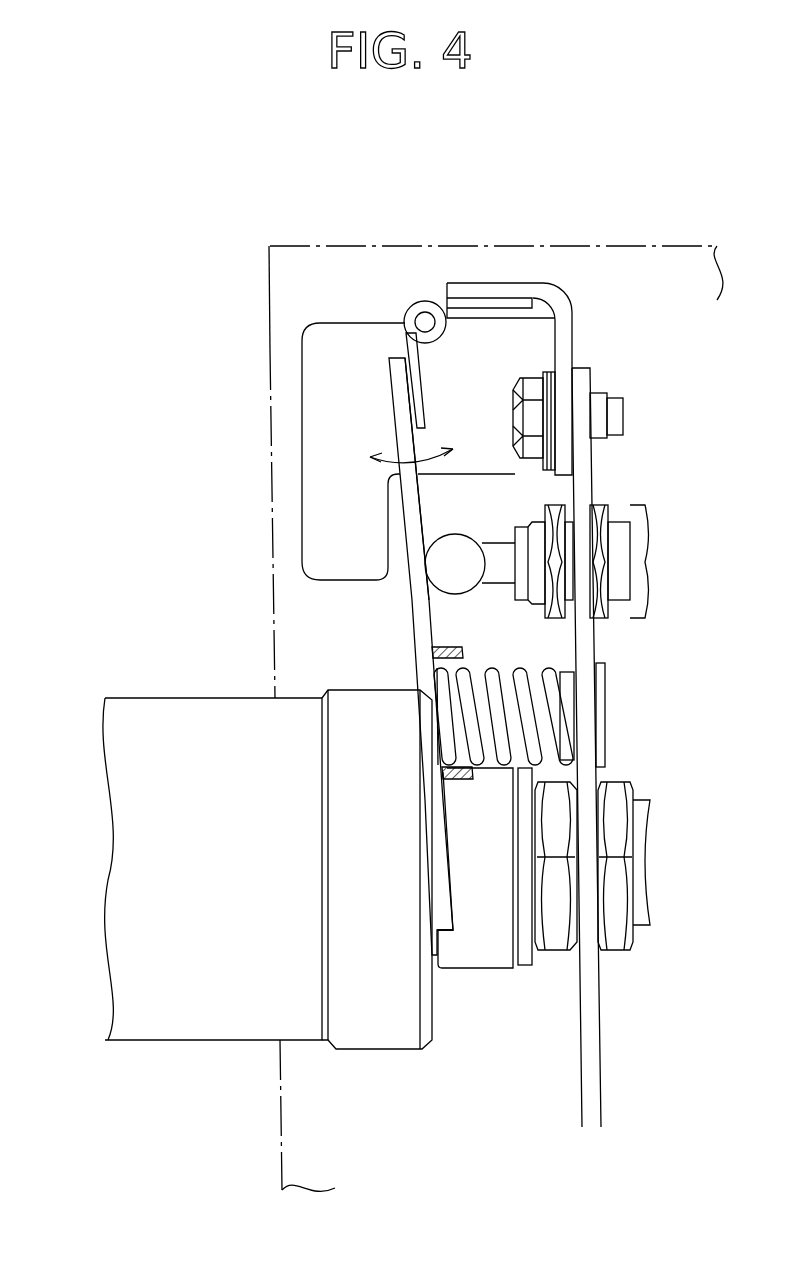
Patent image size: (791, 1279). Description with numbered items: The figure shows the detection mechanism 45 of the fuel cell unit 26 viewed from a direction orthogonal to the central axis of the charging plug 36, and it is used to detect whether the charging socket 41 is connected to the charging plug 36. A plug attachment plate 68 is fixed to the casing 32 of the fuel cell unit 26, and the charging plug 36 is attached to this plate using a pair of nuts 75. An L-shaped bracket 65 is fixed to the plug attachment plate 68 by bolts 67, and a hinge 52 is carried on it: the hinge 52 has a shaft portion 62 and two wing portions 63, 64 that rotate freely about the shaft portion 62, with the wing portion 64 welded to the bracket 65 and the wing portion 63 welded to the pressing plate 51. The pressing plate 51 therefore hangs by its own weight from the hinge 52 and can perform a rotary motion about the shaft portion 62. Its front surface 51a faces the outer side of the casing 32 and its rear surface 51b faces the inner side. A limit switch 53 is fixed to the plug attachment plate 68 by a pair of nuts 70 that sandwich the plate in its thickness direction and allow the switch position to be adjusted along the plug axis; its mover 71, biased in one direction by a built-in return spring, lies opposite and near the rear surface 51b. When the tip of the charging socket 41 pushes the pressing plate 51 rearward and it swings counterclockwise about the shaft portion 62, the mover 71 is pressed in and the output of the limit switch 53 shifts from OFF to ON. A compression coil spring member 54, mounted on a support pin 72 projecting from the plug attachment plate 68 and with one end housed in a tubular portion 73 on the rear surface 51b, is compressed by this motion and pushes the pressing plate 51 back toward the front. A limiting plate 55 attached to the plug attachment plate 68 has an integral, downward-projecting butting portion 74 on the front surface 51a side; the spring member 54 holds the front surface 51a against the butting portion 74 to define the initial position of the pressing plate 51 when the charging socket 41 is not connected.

The fuel cell unit 26 is at (226, 238).
The casing 32 is at (548, 244).
The charging plug 36 is at (480, 968).
The charging socket 41 is at (190, 698).
The detection mechanism 45 is at (368, 302).
The pressing plate 51 is at (425, 604).
The front surface 51a is at (410, 645).
The rear surface 51b is at (433, 620).
The hinge 52 is at (425, 322).
The limit switch 53 is at (527, 512).
The spring member 54 is at (553, 700).
The limiting plate 55 is at (322, 384).
The shaft portion 62 is at (420, 303).
The wing portion 63 is at (422, 367).
The wing portion 64 is at (497, 298).
The bracket 65 is at (570, 307).
The bolts 67 is at (533, 377).
The plug attachment plate 68 is at (585, 645).
The pair of nuts 70 is at (553, 545).
The mover 71 is at (455, 545).
The support pin 72 is at (547, 737).
The tubular portion 73 is at (450, 648).
The butting portion 74 is at (323, 530).
The pair of nuts 75 is at (553, 940).